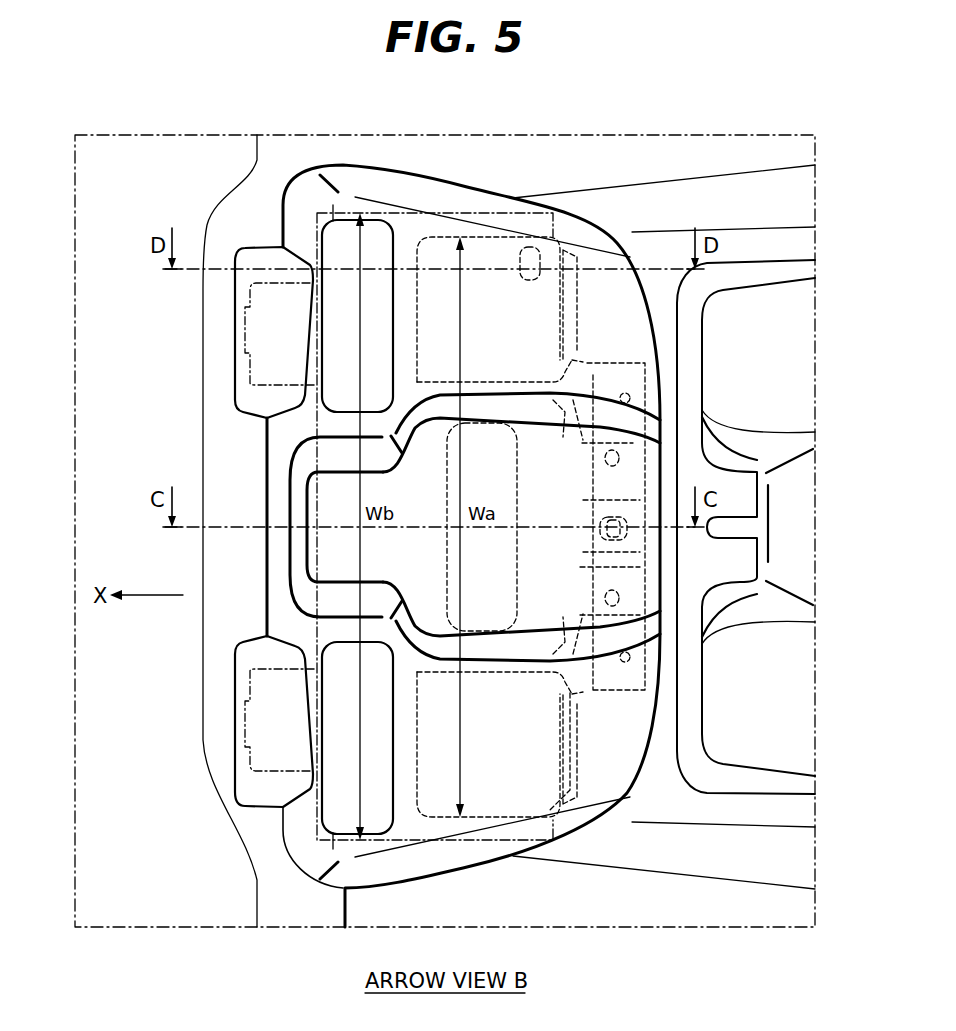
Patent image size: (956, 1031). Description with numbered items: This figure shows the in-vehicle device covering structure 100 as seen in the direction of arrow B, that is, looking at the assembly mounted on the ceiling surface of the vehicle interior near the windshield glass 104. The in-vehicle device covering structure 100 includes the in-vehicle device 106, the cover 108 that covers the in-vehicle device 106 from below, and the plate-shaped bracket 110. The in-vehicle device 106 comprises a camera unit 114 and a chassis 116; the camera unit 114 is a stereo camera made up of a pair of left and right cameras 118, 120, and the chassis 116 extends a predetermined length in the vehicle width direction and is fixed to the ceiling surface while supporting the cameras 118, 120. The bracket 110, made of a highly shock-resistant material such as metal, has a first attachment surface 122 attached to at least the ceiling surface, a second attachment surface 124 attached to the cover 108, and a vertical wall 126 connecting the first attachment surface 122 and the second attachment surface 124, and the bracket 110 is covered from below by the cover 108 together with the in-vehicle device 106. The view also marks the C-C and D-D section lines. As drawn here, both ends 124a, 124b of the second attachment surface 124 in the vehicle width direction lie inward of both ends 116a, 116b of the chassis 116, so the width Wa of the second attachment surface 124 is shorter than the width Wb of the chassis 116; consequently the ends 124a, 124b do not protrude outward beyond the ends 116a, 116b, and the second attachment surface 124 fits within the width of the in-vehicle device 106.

The in-vehicle device covering structure 100 is at (444, 168).
The windshield glass 104 is at (165, 152).
The in-vehicle device 106 is at (305, 424).
The cover 108 is at (367, 185).
The bracket 110 is at (500, 252).
The camera unit 114 is at (243, 298).
The chassis 116 is at (327, 555).
The end of the chassis 116a is at (401, 212).
The end of the chassis 116b is at (403, 842).
The camera 118 is at (260, 365).
The camera 120 is at (260, 720).
The first attachment surface 122 is at (633, 672).
The second attachment surface 124 is at (550, 772).
The end of the second attachment surface 124a is at (474, 235).
The end of the second attachment surface 124b is at (476, 818).
The vertical wall 126 is at (566, 613).